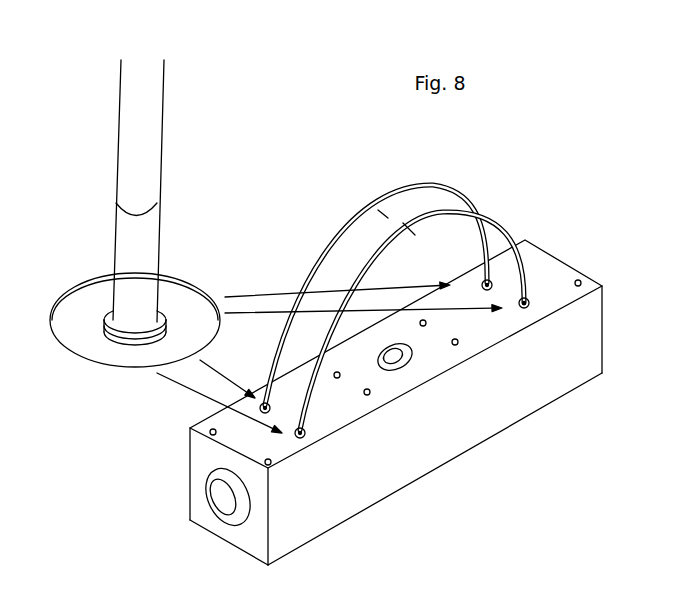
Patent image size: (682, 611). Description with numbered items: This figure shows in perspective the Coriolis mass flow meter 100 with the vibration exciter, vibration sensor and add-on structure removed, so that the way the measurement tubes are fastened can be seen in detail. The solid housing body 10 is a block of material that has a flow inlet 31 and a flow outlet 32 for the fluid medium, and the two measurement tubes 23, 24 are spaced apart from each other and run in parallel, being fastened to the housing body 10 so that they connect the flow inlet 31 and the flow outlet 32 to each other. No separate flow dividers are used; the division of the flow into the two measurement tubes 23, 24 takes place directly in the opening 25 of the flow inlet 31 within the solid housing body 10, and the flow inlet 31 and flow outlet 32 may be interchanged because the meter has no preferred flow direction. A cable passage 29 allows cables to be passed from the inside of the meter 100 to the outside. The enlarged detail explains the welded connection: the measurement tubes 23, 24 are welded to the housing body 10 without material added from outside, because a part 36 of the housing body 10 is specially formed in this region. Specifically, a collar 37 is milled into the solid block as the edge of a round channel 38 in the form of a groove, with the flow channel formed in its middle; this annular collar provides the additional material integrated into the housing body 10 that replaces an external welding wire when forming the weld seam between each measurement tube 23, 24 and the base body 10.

The housing body 10 is at (377, 477).
The measurement tube 23 is at (360, 213).
The measurement tube 24 is at (400, 308).
The opening of the flow inlet 25 is at (228, 482).
The cable passage 29 is at (405, 362).
The flow inlet 31 is at (229, 509).
The flow outlet 32 is at (590, 263).
The part of the housing body 36 is at (85, 257).
The collar 37 is at (110, 317).
The round channel 38 is at (77, 335).
The Coriolis mass flow meter 100 is at (476, 471).